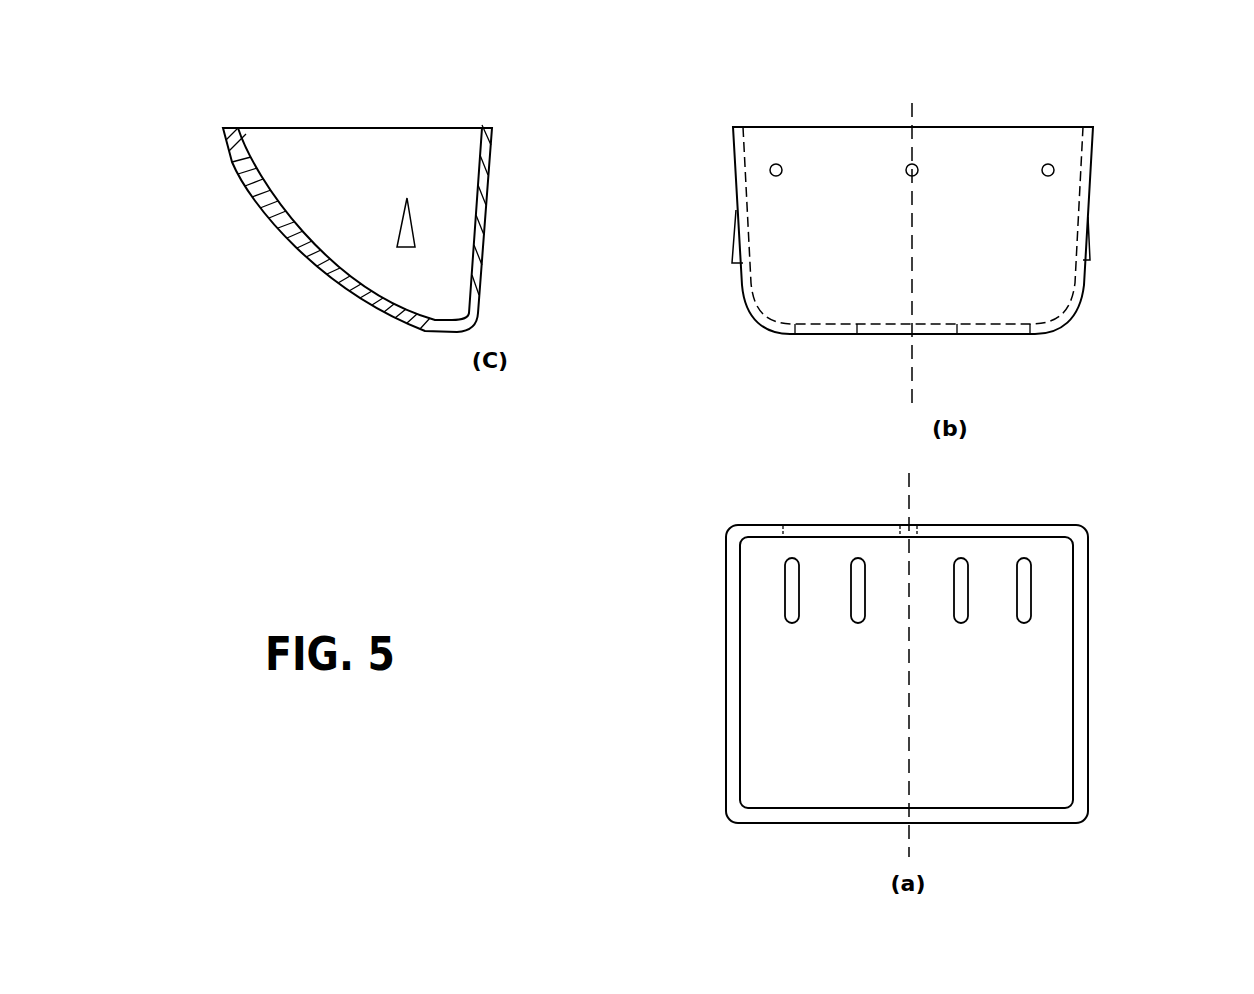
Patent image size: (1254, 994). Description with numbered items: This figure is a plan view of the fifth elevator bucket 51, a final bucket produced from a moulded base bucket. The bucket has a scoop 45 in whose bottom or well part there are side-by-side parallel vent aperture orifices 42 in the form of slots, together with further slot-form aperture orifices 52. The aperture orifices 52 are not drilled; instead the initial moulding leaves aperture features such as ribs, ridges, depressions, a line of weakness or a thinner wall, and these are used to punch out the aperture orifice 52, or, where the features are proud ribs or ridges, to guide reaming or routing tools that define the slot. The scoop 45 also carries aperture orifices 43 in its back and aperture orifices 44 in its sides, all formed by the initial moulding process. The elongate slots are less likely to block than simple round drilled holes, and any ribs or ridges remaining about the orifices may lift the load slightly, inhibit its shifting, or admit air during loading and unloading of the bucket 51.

The aperture orifices 42 is at (423, 323).
The aperture orifices 43 is at (780, 162).
The aperture orifices 44 is at (407, 237).
The scoop 45 is at (297, 170).
The fifth elevator bucket 51 is at (520, 157).
The aperture orifice 52 is at (795, 333).